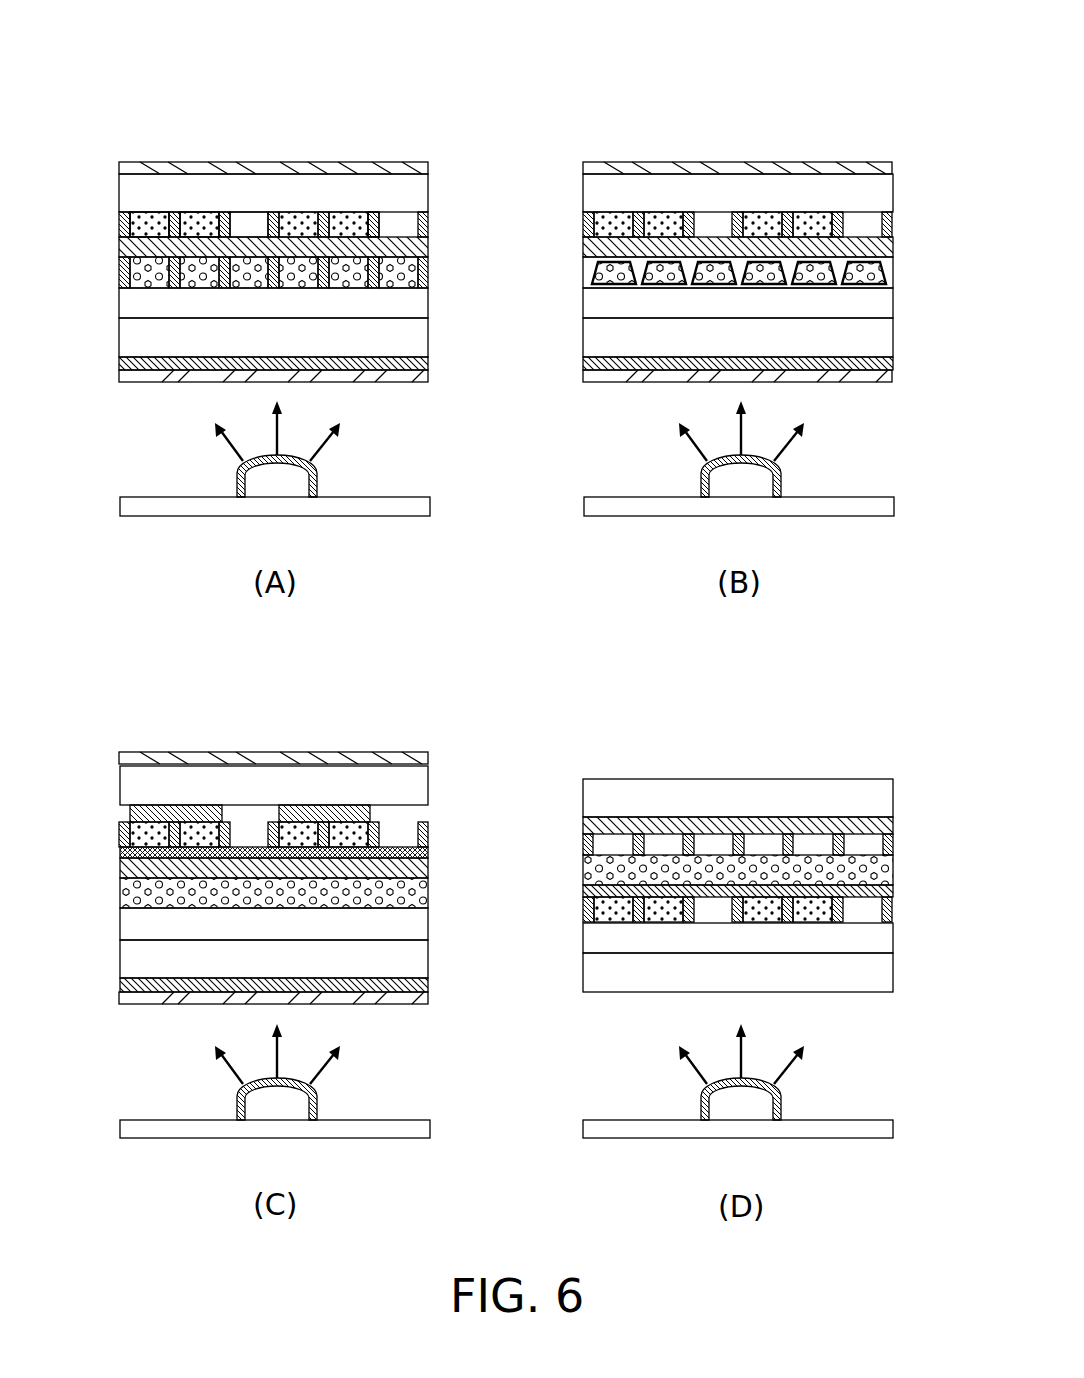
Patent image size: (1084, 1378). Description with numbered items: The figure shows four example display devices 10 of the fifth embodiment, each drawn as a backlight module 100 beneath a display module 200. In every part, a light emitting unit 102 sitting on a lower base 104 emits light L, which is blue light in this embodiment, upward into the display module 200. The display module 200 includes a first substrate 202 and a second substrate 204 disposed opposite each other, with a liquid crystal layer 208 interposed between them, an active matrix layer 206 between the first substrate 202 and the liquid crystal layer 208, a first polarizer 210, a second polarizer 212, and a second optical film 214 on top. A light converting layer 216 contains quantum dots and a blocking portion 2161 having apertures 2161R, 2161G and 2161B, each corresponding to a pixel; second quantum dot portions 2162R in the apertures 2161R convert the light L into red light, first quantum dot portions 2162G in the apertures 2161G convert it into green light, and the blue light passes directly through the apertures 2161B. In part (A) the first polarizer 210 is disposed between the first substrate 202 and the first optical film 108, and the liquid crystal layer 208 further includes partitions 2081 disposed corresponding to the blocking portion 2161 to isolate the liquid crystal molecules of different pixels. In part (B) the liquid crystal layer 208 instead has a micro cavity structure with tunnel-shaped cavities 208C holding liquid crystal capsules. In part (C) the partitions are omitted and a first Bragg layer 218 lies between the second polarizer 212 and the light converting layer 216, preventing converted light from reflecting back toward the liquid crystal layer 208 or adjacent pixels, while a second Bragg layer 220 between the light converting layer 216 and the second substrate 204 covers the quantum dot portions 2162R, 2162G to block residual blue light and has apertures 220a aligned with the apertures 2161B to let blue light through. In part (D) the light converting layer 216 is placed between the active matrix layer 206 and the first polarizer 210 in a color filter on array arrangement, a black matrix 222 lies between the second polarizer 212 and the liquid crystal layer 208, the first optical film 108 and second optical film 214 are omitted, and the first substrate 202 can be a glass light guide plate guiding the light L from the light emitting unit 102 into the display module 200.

The display device 10 is at (437, 50).
The backlight module 100 is at (108, 371).
The light emitting unit 102 is at (320, 476).
The substrate of light source module 104 is at (416, 506).
The first optical film 108 is at (418, 377).
The display module 200 is at (108, 162).
The first substrate 202 is at (416, 337).
The second substrate 204 is at (416, 193).
The active matrix layer 206 is at (416, 303).
The liquid crystal layer 208 is at (437, 257).
The partition 2081 is at (372, 260).
The tunnel-shaped cavity 208C is at (808, 262).
The first polarizer 210 is at (416, 364).
The second polarizer 212 is at (416, 247).
The second optical film 214 is at (418, 168).
The light converting layer 216 is at (437, 212).
The blocking portion 2161 is at (372, 216).
The aperture 2161R is at (169, 212).
The aperture 2161G is at (219, 212).
The aperture 2161B is at (269, 212).
The second quantum dot portion 2162R is at (153, 222).
The first quantum dot portion 2162G is at (198, 222).
The first Bragg layer 218 is at (416, 852).
The second Bragg layer 220 is at (330, 816).
The aperture 220a is at (247, 810).
The black matrix 222 is at (901, 834).
The light L is at (278, 434).